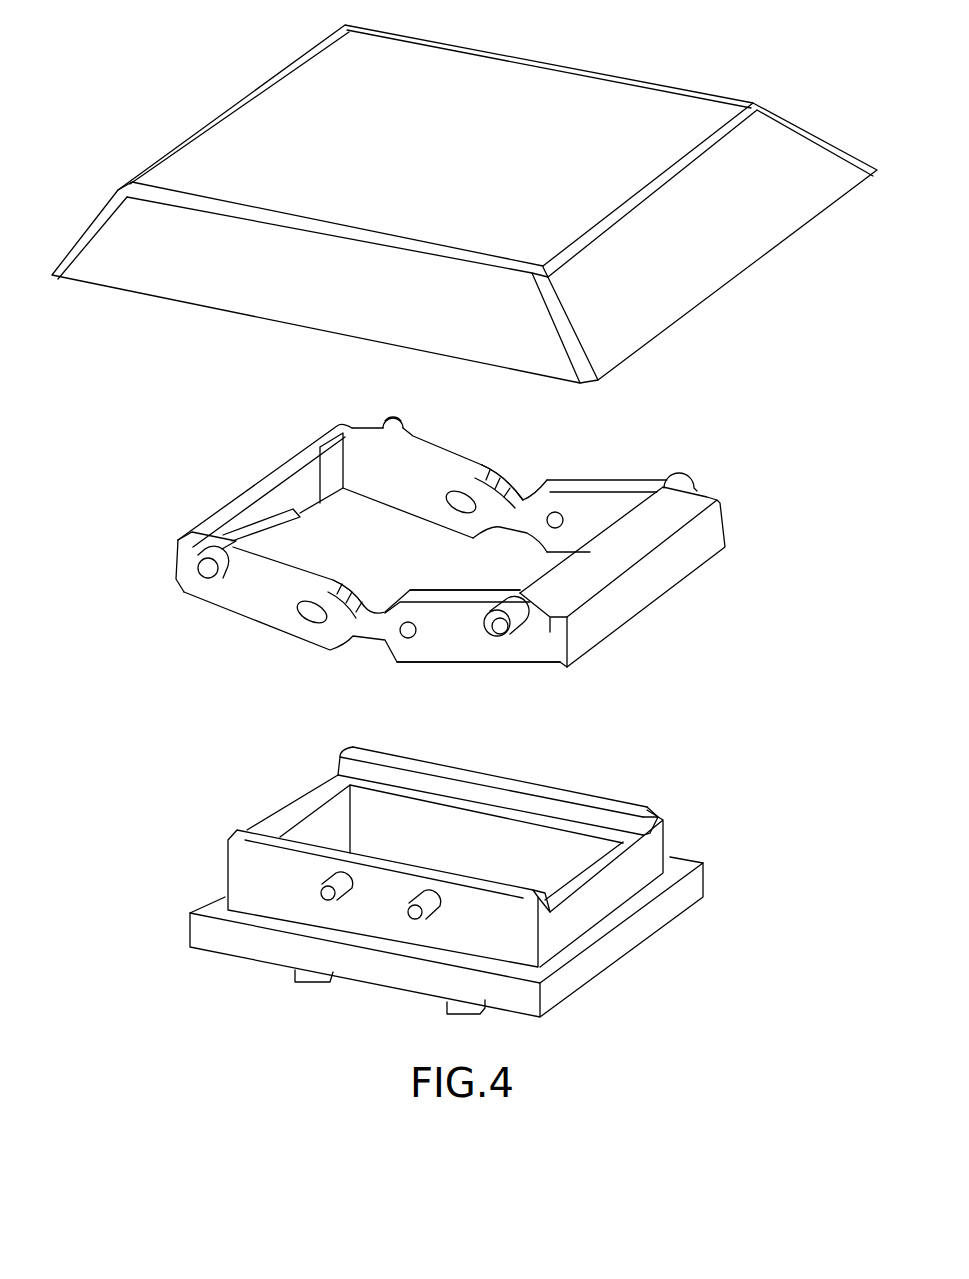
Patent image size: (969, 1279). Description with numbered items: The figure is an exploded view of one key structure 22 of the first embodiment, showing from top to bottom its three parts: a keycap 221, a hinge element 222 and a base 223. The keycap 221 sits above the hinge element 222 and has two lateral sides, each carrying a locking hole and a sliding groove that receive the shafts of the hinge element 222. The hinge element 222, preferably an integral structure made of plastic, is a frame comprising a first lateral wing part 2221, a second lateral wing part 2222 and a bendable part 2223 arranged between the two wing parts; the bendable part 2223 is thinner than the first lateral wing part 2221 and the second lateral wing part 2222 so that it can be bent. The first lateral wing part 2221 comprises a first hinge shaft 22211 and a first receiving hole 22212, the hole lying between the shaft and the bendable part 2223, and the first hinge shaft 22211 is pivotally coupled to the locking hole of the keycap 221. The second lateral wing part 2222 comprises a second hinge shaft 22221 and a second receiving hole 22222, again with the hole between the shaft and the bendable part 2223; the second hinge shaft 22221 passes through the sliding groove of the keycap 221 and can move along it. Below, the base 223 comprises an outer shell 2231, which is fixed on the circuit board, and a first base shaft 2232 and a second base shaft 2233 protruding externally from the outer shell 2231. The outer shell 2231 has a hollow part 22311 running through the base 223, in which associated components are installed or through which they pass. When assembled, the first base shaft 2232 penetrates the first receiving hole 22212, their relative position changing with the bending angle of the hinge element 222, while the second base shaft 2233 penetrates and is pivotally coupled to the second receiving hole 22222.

The key structure 22 is at (741, 742).
The keycap 221 is at (562, 78).
The hinge element 222 is at (263, 444).
The base 223 is at (296, 782).
The first lateral wing part 2221 is at (257, 597).
The second lateral wing part 2222 is at (477, 648).
The bendable part 2223 is at (497, 464).
The first hinge shaft 22211 is at (394, 418).
The first receiving hole 22212 is at (465, 503).
The second hinge shaft 22221 is at (681, 474).
The second receiving hole 22222 is at (555, 511).
The outer shell 2231 is at (604, 885).
The hollow part 22311 is at (477, 833).
The first base shaft 2232 is at (325, 893).
The second base shaft 2233 is at (410, 910).